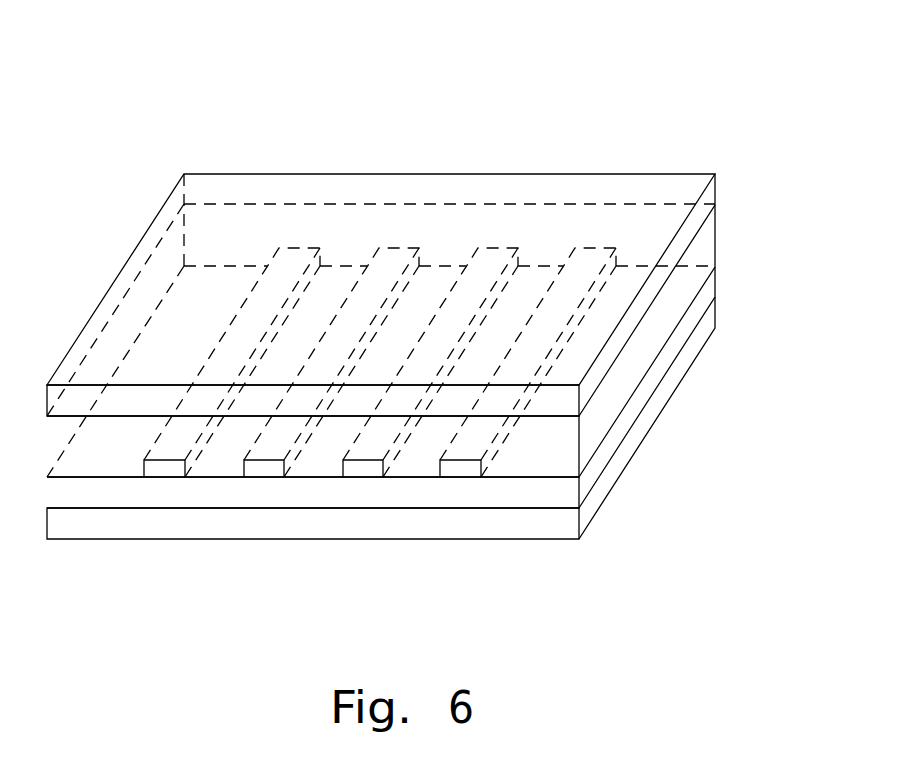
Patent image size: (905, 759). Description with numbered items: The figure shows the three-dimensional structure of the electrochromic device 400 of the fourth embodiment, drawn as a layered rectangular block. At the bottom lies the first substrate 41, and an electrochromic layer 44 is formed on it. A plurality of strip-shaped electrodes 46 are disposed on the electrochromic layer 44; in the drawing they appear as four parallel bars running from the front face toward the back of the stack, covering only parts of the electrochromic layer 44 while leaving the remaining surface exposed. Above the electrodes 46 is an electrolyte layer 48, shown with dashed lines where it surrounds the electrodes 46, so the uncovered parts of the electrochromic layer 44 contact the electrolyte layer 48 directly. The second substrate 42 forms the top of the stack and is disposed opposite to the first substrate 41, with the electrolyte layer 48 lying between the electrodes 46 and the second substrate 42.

The electrochromic device 400 is at (575, 70).
The second substrate 42 is at (712, 193).
The electrolyte layer 48 is at (712, 234).
The electrochromic layer 44 is at (712, 282).
The first substrate 41 is at (712, 323).
The strip-shaped electrodes 46 is at (458, 468).